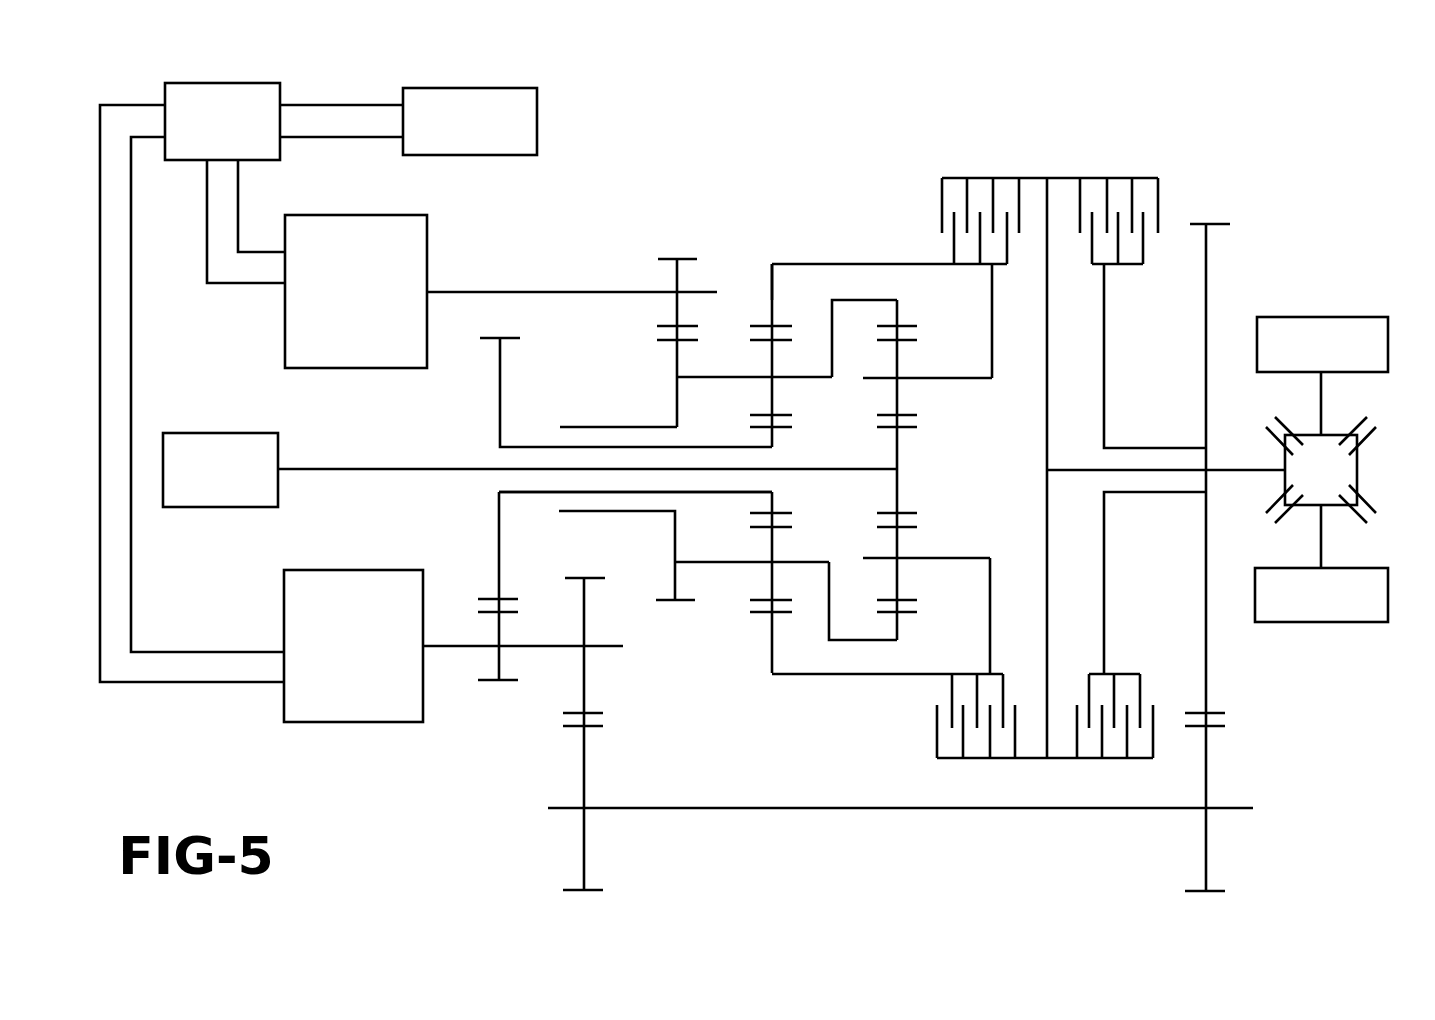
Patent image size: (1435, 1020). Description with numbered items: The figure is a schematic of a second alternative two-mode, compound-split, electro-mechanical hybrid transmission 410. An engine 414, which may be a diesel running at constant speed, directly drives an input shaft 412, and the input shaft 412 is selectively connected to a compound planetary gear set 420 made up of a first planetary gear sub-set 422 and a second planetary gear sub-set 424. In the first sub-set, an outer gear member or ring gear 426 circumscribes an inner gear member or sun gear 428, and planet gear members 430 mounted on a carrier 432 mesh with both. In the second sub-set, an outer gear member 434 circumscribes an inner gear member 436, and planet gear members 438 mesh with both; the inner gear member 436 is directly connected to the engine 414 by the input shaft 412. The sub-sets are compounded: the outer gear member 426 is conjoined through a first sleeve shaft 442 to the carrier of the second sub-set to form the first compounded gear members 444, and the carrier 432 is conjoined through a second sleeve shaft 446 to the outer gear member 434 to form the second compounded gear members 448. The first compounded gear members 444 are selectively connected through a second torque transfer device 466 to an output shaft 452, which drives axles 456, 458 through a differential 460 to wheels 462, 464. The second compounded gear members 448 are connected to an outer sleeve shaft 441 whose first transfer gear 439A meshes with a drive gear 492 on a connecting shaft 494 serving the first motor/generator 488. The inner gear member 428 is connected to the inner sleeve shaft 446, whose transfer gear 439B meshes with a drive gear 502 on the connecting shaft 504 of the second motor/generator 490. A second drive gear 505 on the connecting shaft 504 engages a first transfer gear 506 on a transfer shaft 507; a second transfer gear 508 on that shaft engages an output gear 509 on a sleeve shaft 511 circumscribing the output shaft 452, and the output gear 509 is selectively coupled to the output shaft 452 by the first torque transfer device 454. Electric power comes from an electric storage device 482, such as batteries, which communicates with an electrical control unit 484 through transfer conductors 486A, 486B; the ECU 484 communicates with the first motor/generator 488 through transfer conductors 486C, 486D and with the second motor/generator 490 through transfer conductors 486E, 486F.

The hybrid transmission 410 is at (1118, 122).
The input shaft 412 is at (352, 471).
The engine 414 is at (248, 486).
The compound planetary gear set 420 is at (845, 250).
The first planetary gear sub-set 422 is at (752, 658).
The second planetary gear sub-set 424 is at (875, 660).
The outer gear member 426 is at (772, 300).
The inner gear member 428 is at (774, 496).
The planet gear members 430 is at (772, 402).
The carrier 432 is at (705, 565).
The outer gear member 434 is at (897, 312).
The inner gear member 436 is at (897, 445).
The planet gear members 438 is at (897, 535).
The first transfer gear 439A is at (676, 352).
The transfer gear 439B is at (498, 393).
The outer sleeve shaft 441 is at (573, 425).
The first sleeve shaft 442 is at (825, 676).
The first compounded gear members 444 is at (799, 252).
The second sleeve shaft 446 is at (885, 300).
The second compounded gear members 448 is at (885, 641).
The output shaft 452 is at (1157, 468).
The first torque transfer device 454 is at (1108, 769).
The axle 456 is at (1322, 400).
The axle 458 is at (1322, 542).
The differential 460 is at (1362, 479).
The wheel 462 is at (1350, 359).
The wheel 464 is at (1349, 610).
The second torque transfer device 466 is at (965, 769).
The electric storage device 482 is at (498, 137).
The electrical control unit 484 is at (250, 142).
The transfer conductor 486A is at (351, 102).
The transfer conductor 486B is at (350, 140).
The transfer conductor 486C is at (207, 258).
The transfer conductor 486D is at (252, 255).
The transfer conductor 486E is at (200, 650).
The transfer conductor 486F is at (203, 684).
The first motor/generator 488 is at (384, 306).
The second motor/generator 490 is at (381, 660).
The drive gear 492 is at (676, 270).
The connecting shaft 494 is at (520, 290).
The drive gear 502 is at (497, 627).
The connecting shaft 504 is at (463, 648).
The second drive gear 505 is at (586, 690).
The first transfer gear 506 is at (586, 775).
The transfer shaft 507 is at (740, 810).
The second transfer gear 508 is at (1208, 771).
The output gear 509 is at (1208, 670).
The sleeve shaft 511 is at (1153, 494).